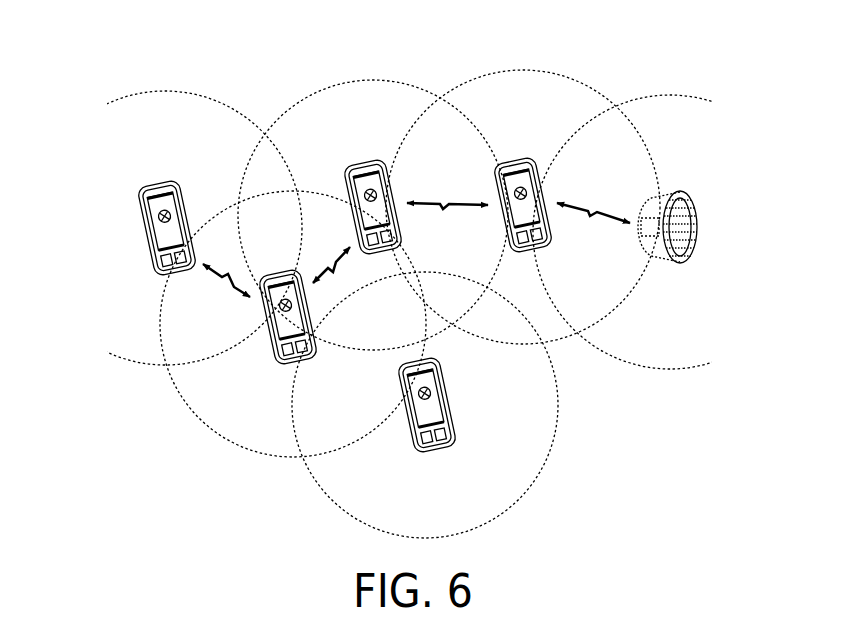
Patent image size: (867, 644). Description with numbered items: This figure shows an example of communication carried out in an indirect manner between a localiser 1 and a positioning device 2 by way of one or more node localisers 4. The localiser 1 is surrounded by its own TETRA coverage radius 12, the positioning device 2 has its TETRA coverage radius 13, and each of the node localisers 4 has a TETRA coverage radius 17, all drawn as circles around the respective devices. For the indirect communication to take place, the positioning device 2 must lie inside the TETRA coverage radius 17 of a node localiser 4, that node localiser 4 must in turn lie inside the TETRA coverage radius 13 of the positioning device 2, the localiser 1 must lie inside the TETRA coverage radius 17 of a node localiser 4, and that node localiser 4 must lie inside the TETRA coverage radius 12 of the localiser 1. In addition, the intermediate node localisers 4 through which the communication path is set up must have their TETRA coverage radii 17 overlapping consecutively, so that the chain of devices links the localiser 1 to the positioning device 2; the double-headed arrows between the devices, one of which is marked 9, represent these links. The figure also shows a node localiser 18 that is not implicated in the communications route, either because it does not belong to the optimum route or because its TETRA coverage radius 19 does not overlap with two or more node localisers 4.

The localiser 1 is at (150, 185).
The positioning devices 2 is at (680, 260).
The node localisers 4 is at (281, 275).
The communication link 9 is at (230, 283).
The TETRA coverage radius 12 is at (193, 95).
The TETRA coverage radius 13 is at (690, 97).
The TETRA coverage radius 17 is at (238, 502).
The node localisers 18 is at (443, 383).
The TETRA coverage radius 19 is at (547, 463).